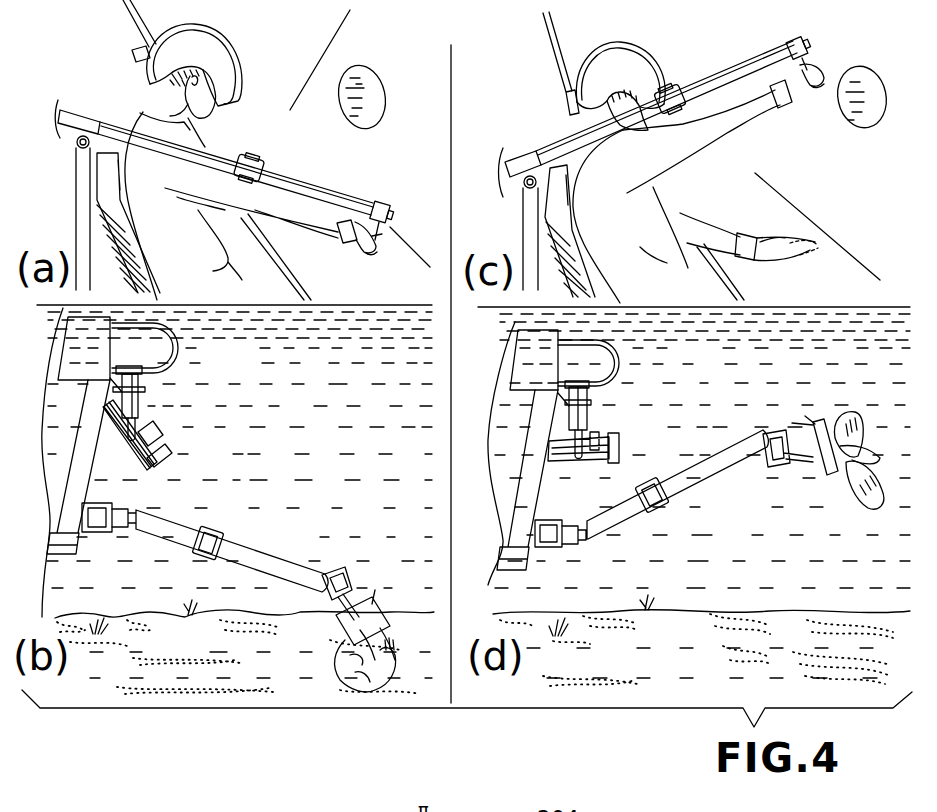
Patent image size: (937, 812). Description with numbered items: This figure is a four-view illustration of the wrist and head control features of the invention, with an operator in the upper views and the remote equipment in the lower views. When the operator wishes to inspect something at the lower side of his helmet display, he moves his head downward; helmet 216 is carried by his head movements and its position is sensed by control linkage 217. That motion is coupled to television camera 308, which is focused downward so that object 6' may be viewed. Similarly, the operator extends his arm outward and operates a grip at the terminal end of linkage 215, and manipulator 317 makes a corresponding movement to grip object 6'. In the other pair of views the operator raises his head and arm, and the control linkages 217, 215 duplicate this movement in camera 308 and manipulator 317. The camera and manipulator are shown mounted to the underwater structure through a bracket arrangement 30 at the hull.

The control linkage 217 is at (128, 22).
The helmet 216 is at (220, 34).
The linkage 215 is at (120, 125).
The mounting bracket 30 is at (186, 376).
The television camera 308 is at (148, 428).
The manipulator 317 is at (252, 551).
The object 6' is at (609, 552).